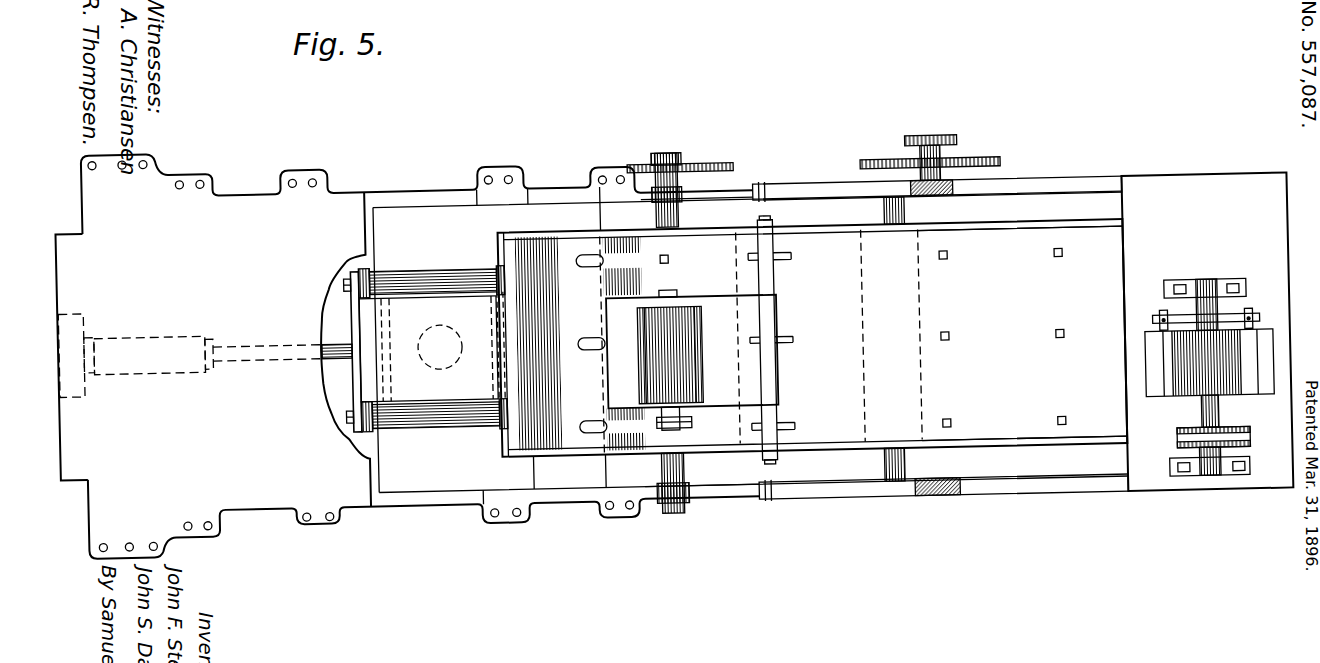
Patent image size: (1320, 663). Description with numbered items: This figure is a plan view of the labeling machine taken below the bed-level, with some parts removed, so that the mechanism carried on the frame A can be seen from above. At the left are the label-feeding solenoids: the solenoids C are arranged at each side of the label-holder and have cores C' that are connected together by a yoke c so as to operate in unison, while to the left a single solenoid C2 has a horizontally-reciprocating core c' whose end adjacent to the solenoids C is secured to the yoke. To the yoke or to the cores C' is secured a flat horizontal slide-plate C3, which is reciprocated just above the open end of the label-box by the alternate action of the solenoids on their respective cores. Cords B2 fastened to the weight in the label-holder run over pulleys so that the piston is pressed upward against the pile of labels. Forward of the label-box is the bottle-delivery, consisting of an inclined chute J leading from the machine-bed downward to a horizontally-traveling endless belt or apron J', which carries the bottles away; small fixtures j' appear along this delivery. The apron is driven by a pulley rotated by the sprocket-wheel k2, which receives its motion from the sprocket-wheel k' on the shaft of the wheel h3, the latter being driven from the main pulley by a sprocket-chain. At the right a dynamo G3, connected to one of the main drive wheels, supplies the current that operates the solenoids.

The frame A is at (450, 501).
The solenoids C is at (431, 268).
The cores C' is at (434, 427).
The single solenoid C2 is at (199, 365).
The slide-plate C3 is at (432, 348).
The yoke c is at (328, 352).
The horizontally-reciprocating core c' is at (321, 337).
The inclined chute J is at (812, 339).
The endless belt or apron J' is at (1023, 332).
The platen bolt holes j' is at (1002, 337).
The cords B2 is at (702, 357).
The sprocket-wheel k2 is at (707, 170).
The sprocket-wheel k' is at (927, 304).
The wheel h3 is at (938, 164).
The dynamo G3 is at (1263, 357).